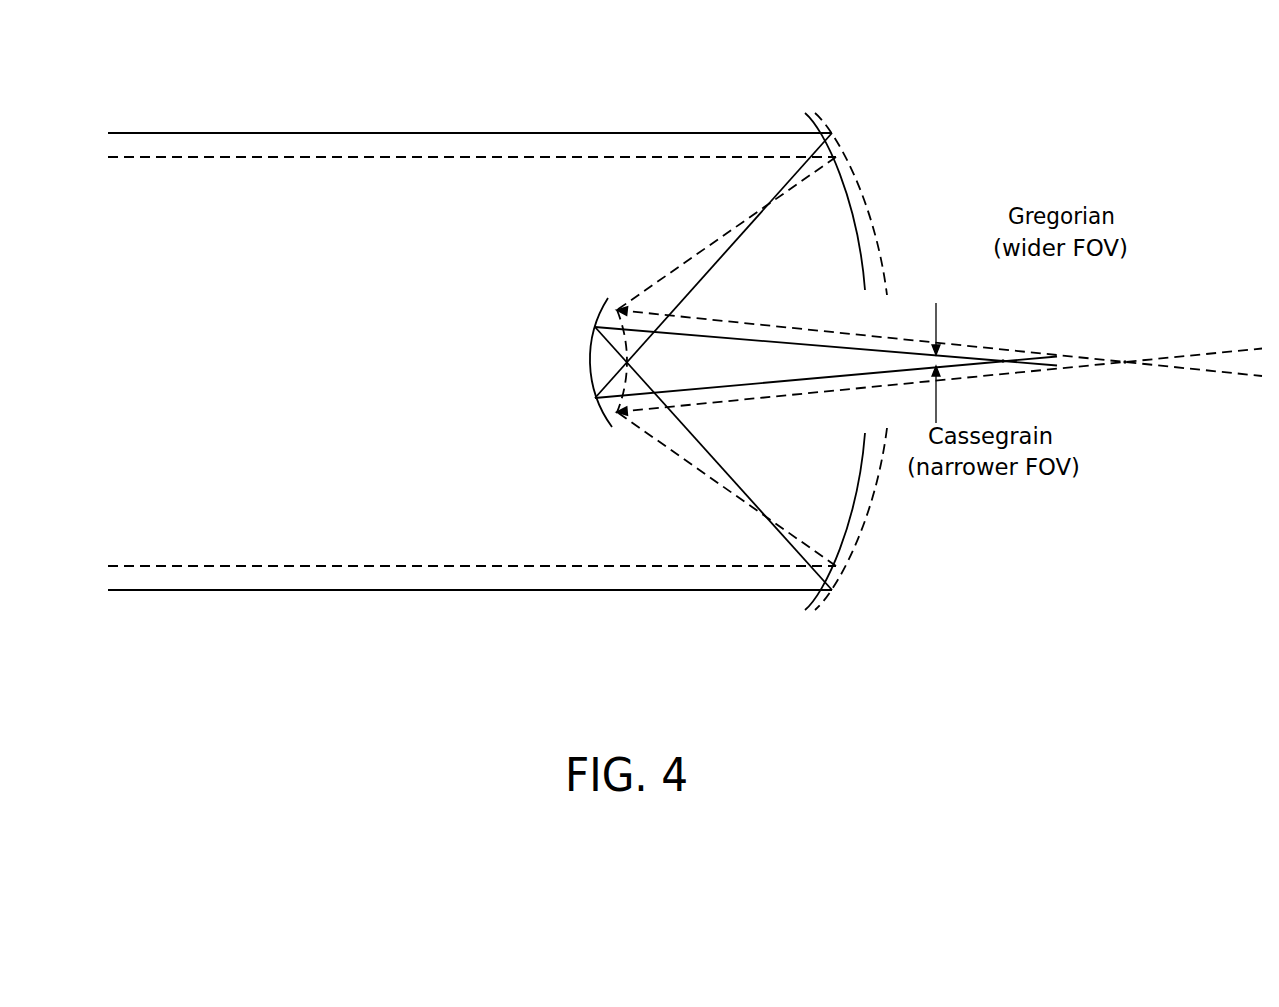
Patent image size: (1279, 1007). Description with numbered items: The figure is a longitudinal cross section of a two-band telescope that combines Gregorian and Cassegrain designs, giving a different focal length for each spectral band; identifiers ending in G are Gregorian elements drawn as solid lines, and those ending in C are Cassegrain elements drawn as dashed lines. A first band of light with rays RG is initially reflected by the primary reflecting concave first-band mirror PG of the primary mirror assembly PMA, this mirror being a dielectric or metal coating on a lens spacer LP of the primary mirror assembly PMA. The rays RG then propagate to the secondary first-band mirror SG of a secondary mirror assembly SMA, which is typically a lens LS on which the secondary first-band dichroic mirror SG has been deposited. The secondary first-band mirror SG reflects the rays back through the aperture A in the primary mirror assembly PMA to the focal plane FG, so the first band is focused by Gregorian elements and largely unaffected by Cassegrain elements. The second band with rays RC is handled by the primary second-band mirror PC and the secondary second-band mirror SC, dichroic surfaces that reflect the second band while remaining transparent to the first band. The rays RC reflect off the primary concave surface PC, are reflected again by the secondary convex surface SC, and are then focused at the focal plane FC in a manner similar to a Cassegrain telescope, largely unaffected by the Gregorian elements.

The first-band rays RG is at (200, 132).
The second-band rays RC is at (200, 160).
The primary mirror assembly PMA is at (812, 104).
The primary second-band mirror PC is at (857, 227).
The primary reflecting concave first-band mirror PG is at (863, 183).
The lens spacer LP is at (870, 488).
The secondary mirror assembly SMA is at (595, 302).
The secondary first-band mirror SG is at (590, 367).
The secondary second-band mirror SC is at (615, 418).
The lens LS is at (600, 347).
The aperture A is at (903, 298).
The focal plane FG is at (1008, 357).
The focal plane FC is at (1122, 362).